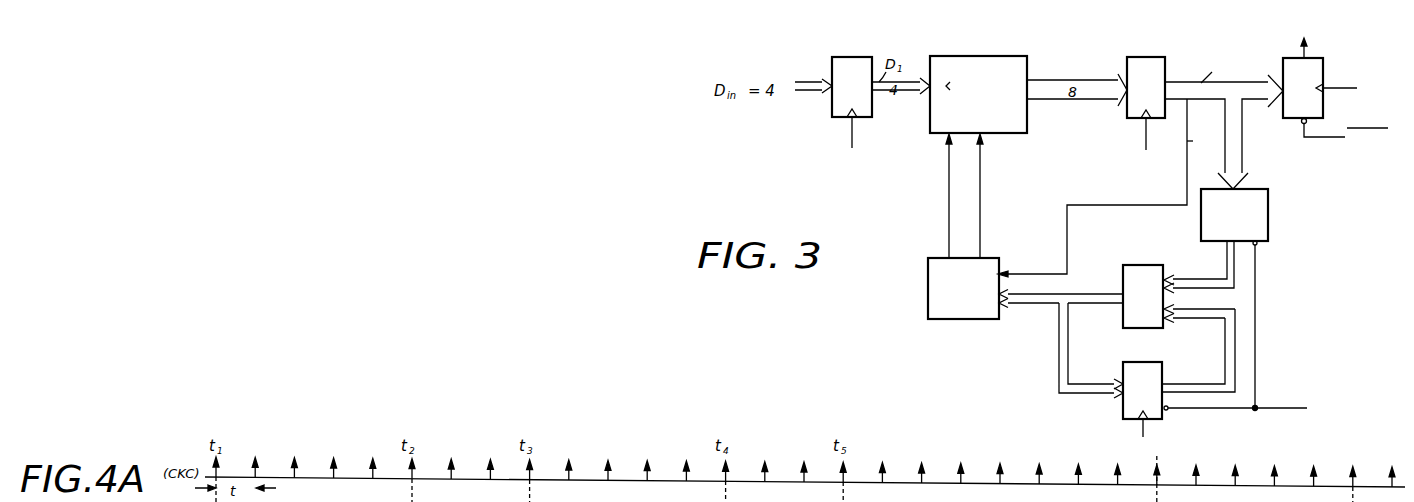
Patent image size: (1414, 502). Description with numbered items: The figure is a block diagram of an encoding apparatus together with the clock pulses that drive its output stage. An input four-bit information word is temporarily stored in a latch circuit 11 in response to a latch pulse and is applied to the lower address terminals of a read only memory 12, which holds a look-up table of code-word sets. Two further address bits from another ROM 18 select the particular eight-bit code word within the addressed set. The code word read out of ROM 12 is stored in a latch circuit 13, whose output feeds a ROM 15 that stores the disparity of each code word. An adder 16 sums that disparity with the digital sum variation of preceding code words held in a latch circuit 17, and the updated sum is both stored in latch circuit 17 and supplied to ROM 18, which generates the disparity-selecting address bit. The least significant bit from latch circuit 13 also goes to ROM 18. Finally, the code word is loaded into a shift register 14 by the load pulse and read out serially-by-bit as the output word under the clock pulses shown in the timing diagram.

The latch circuit 11 is at (834, 63).
The read only memory (ROM) 12 is at (1027, 62).
The latch circuit 13 is at (1165, 62).
The shift register 14 is at (1325, 61).
The ROM 15 is at (1268, 231).
The adder 16 is at (1153, 266).
The latch circuit 17 is at (1161, 363).
The ROM 18 is at (972, 313).